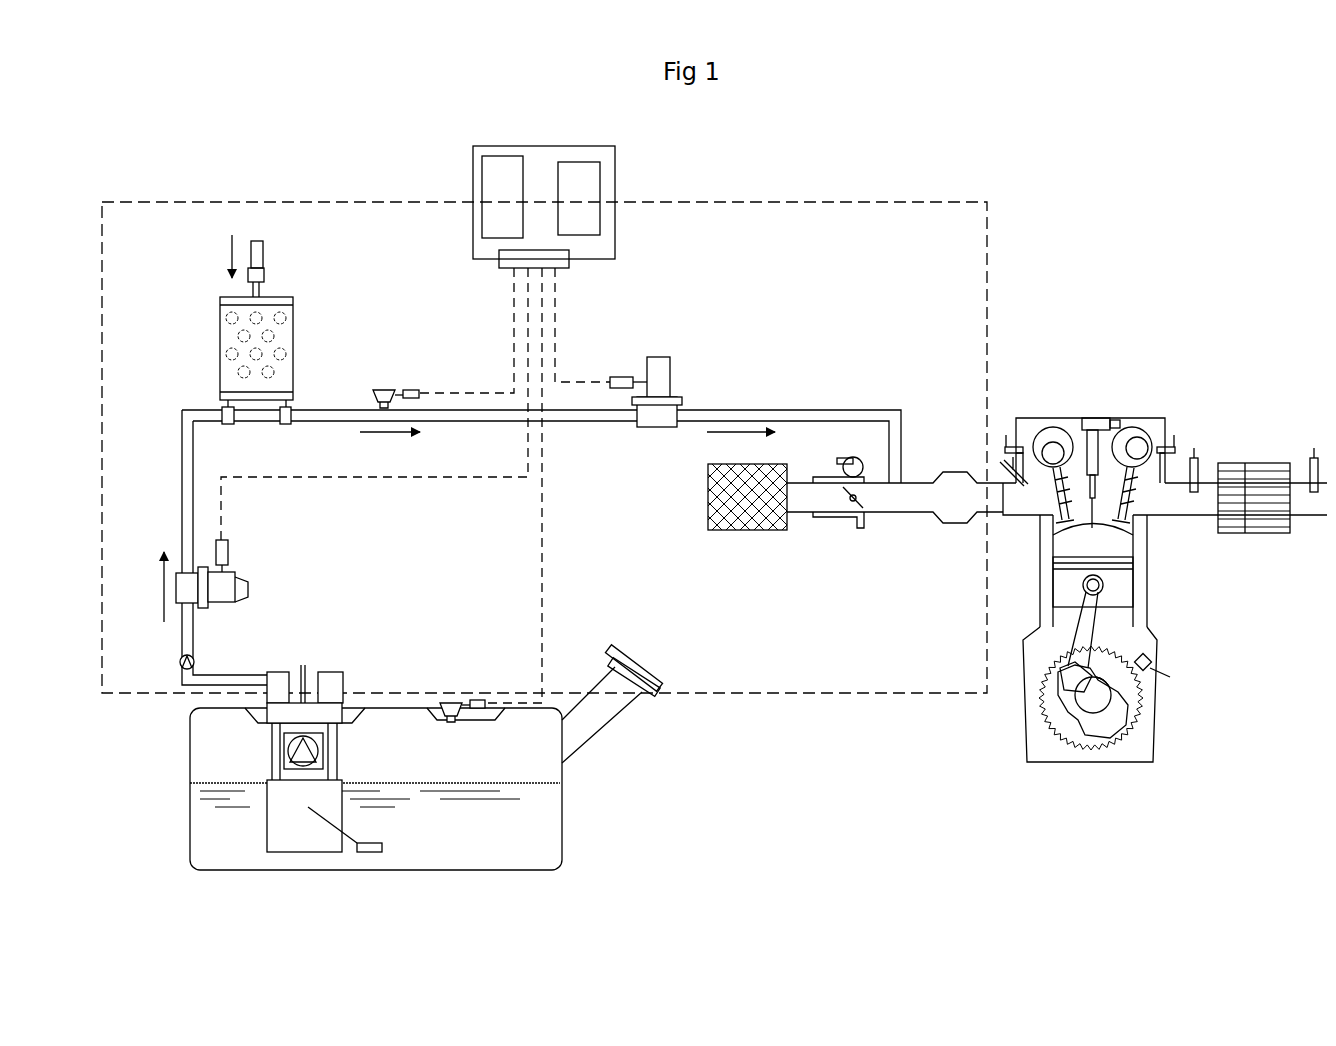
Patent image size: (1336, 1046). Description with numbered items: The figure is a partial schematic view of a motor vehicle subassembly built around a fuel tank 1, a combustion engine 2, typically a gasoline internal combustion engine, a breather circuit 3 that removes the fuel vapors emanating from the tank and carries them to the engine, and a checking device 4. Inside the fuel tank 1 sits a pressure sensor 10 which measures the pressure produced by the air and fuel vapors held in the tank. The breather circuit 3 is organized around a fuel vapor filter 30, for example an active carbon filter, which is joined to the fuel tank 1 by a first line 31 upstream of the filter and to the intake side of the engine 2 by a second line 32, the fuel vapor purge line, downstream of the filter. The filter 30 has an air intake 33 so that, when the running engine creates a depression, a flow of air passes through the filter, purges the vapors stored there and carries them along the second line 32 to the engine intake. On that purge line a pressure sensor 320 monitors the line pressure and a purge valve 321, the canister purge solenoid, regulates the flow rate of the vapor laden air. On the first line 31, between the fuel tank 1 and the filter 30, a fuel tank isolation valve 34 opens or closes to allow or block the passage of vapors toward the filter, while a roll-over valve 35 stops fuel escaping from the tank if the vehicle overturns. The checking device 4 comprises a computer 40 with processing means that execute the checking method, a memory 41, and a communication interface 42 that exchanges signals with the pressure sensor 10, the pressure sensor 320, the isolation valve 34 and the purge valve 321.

The fuel tank 1 is at (466, 845).
The combustion engine 2 is at (1107, 396).
The breather circuit 3 is at (158, 178).
The checking device 4 is at (460, 424).
The pressure sensor 10 is at (478, 698).
The fuel vapor filter 30 is at (272, 362).
The first line 31 is at (178, 488).
The second line 32 is at (803, 405).
The air intake 33 is at (259, 244).
The fuel tank isolation valve 34 is at (228, 583).
The roll-over valve 35 is at (180, 657).
The computer 40 is at (594, 210).
The memory 41 is at (520, 210).
The communication interface 42 is at (558, 270).
The pressure sensor 320 is at (410, 388).
The purge valve 321 is at (665, 362).